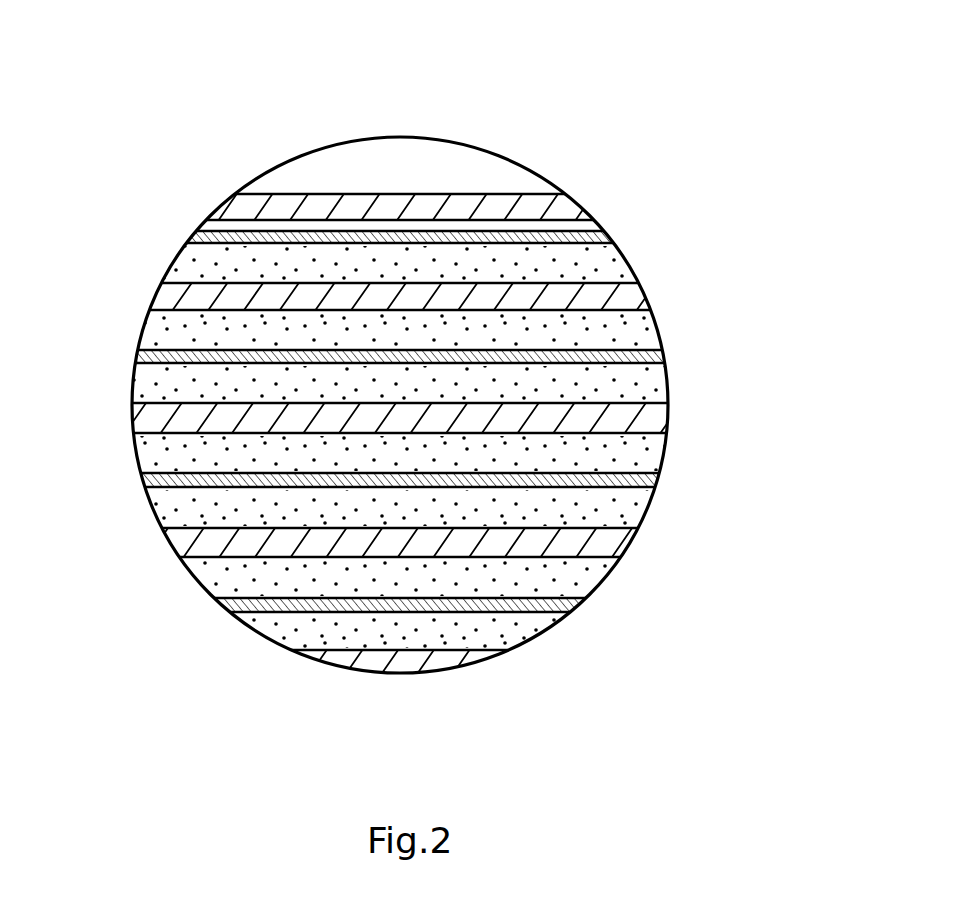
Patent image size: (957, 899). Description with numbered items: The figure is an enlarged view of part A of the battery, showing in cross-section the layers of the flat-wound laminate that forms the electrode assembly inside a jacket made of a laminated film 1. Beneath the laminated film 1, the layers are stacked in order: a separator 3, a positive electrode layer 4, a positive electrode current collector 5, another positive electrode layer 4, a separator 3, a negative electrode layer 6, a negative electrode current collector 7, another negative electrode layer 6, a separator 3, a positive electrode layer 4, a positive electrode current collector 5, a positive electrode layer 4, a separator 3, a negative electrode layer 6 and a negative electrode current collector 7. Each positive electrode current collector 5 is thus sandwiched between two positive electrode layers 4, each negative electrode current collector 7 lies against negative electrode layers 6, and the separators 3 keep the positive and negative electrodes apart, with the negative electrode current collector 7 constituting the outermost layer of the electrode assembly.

The part A is at (275, 165).
The laminated film 1 is at (515, 195).
The separator 3 is at (178, 297).
The positive electrode layer 4 is at (638, 330).
The positive electrode current collector 5 is at (662, 357).
The negative electrode layer 6 is at (613, 272).
The negative electrode current collector 7 is at (607, 237).